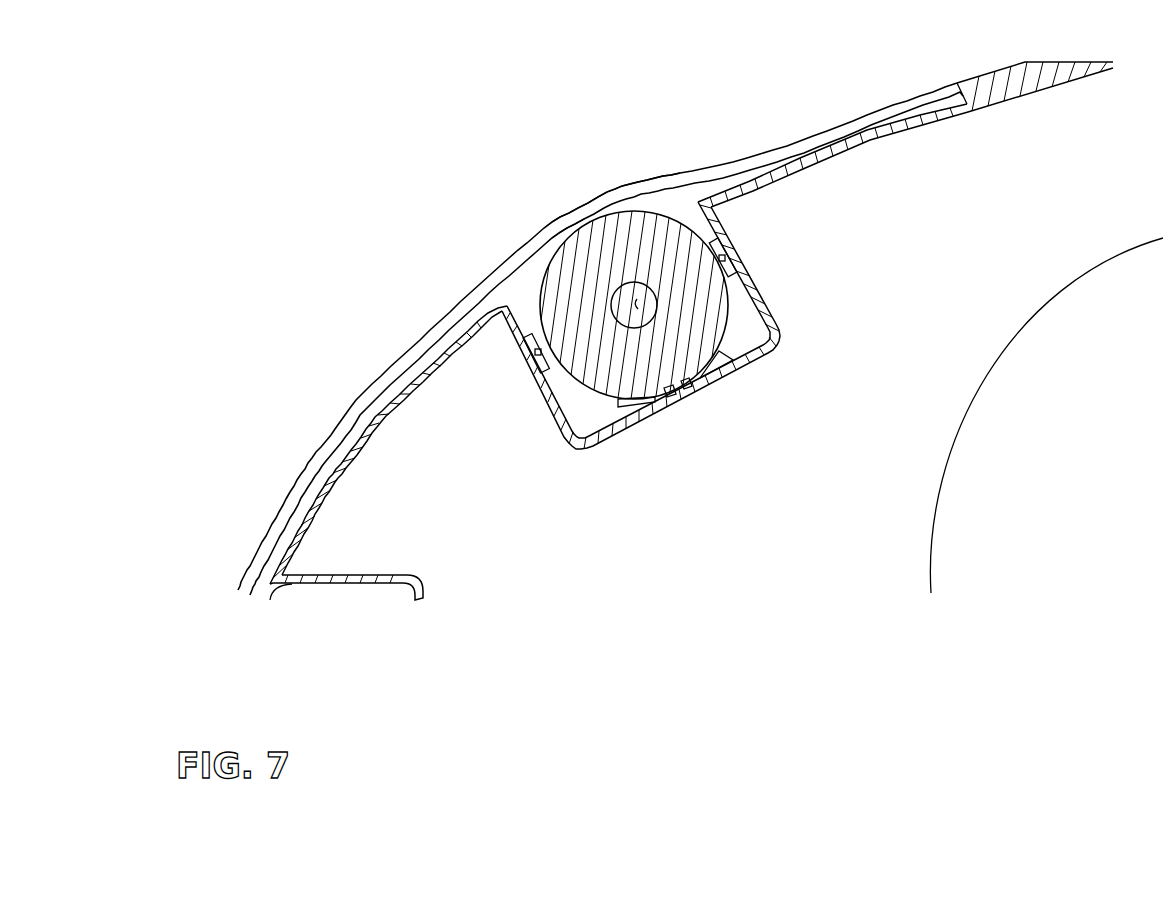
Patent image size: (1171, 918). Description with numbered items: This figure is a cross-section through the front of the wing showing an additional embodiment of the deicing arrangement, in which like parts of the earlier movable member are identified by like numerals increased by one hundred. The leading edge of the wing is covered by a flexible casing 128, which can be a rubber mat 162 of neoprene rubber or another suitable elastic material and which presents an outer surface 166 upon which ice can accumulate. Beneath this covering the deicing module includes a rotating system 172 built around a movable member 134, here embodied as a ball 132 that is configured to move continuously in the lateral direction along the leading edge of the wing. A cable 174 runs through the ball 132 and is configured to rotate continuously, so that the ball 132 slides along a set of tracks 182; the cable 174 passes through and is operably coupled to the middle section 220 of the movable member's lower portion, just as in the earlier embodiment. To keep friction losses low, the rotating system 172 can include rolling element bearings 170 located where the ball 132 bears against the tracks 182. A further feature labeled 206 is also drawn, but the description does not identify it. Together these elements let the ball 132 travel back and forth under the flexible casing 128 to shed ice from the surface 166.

The flexible casing 128 is at (417, 357).
The ball 132 is at (650, 235).
The movable member 134 is at (607, 178).
The rubber mat 162 is at (752, 170).
The surface 166 is at (858, 130).
The rolling element bearings 170 is at (738, 262).
The rotating system 172 is at (795, 326).
The cable 174 is at (640, 322).
The set of tracks 182 is at (722, 367).
The inner surface 206 is at (577, 225).
The middle section 220 is at (637, 299).